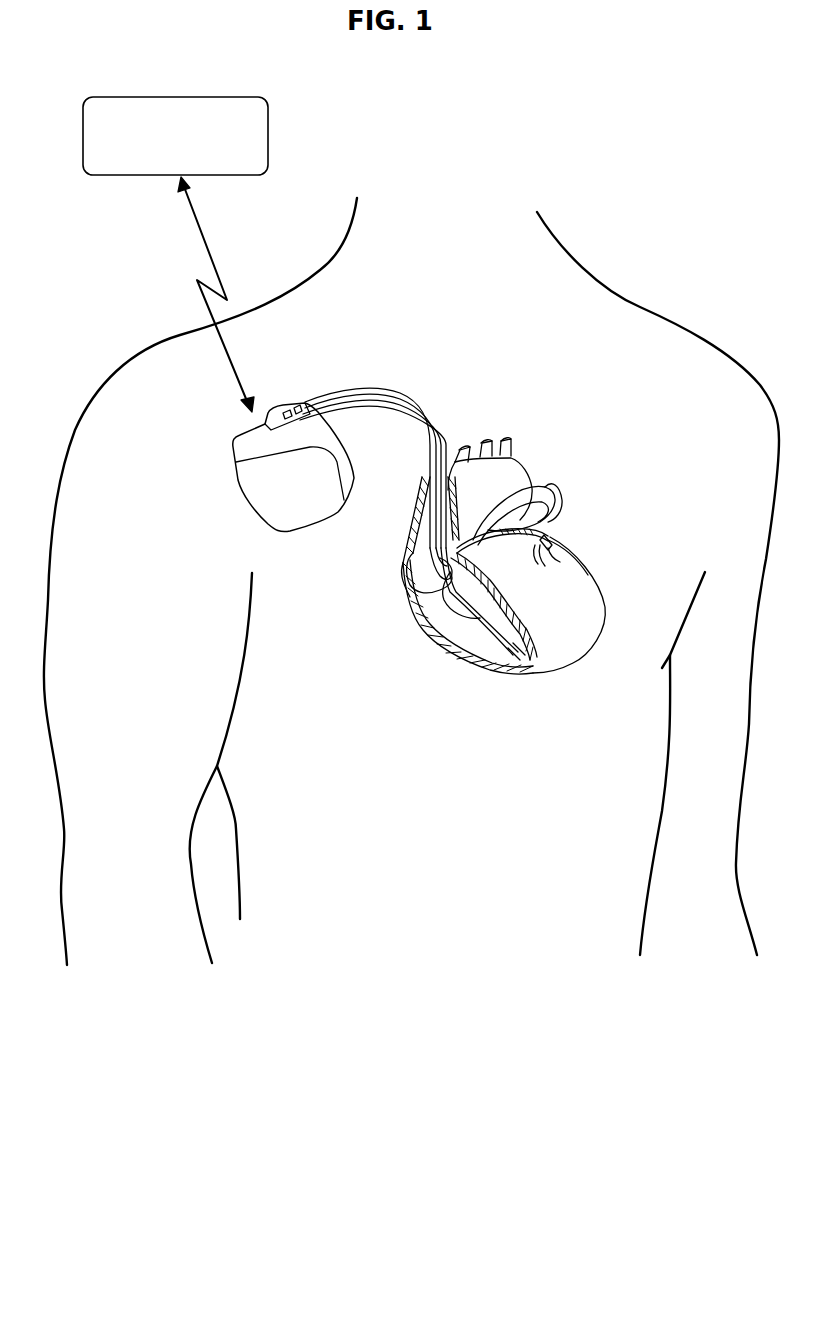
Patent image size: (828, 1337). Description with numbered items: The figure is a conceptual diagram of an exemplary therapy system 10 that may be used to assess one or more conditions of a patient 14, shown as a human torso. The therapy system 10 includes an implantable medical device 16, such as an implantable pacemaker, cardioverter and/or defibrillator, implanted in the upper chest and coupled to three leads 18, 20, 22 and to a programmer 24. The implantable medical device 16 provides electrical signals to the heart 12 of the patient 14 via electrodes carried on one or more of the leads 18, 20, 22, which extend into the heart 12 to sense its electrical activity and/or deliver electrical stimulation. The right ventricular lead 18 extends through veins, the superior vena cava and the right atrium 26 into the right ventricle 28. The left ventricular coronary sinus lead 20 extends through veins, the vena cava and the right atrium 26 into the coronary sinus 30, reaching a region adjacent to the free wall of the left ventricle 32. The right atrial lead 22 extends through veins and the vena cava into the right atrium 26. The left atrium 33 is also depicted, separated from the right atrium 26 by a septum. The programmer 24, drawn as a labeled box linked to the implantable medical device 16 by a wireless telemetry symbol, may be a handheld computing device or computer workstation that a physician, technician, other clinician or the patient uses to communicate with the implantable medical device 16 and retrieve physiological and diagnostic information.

The therapy system 10 is at (605, 99).
The heart 12 is at (558, 687).
The patient 14 is at (640, 307).
The implantable medical device 16 is at (243, 497).
The right ventricular lead 18 is at (400, 400).
The left ventricular coronary sinus lead 20 is at (430, 413).
The right atrial lead 22 is at (432, 442).
The programmer 24 is at (188, 158).
The right atrium 26 is at (420, 572).
The right ventricle 28 is at (460, 632).
The coronary sinus 30 is at (472, 540).
The left ventricle 32 is at (573, 585).
The left atrium 33 is at (507, 488).